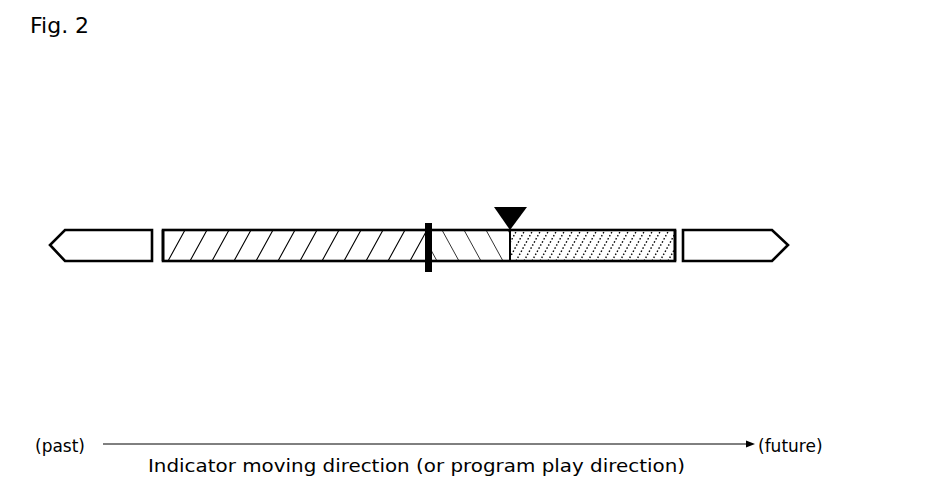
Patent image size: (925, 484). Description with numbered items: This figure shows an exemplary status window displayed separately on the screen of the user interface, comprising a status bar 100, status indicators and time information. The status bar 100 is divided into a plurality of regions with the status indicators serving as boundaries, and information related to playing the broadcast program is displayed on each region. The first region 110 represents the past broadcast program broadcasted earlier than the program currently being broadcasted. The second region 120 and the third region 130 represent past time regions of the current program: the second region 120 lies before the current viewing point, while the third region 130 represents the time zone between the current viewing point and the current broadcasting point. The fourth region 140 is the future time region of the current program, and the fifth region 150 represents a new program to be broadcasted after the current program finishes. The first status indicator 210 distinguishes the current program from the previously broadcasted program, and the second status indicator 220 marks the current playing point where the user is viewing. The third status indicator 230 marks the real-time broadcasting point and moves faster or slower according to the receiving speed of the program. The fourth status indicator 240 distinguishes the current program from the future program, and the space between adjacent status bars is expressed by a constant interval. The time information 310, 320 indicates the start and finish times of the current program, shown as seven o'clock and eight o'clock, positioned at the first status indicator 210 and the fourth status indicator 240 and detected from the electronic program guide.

The status bar 100 is at (257, 264).
The first region 110 is at (83, 244).
The second region 120 is at (307, 244).
The third region 130 is at (492, 244).
The fourth region 140 is at (584, 244).
The fifth region 150 is at (747, 244).
The first status indicator 210 is at (154, 273).
The second status indicator 220 is at (428, 222).
The third status indicator 230 is at (512, 207).
The fourth status indicator 240 is at (685, 275).
The time information 310 is at (163, 194).
The time information 320 is at (685, 194).